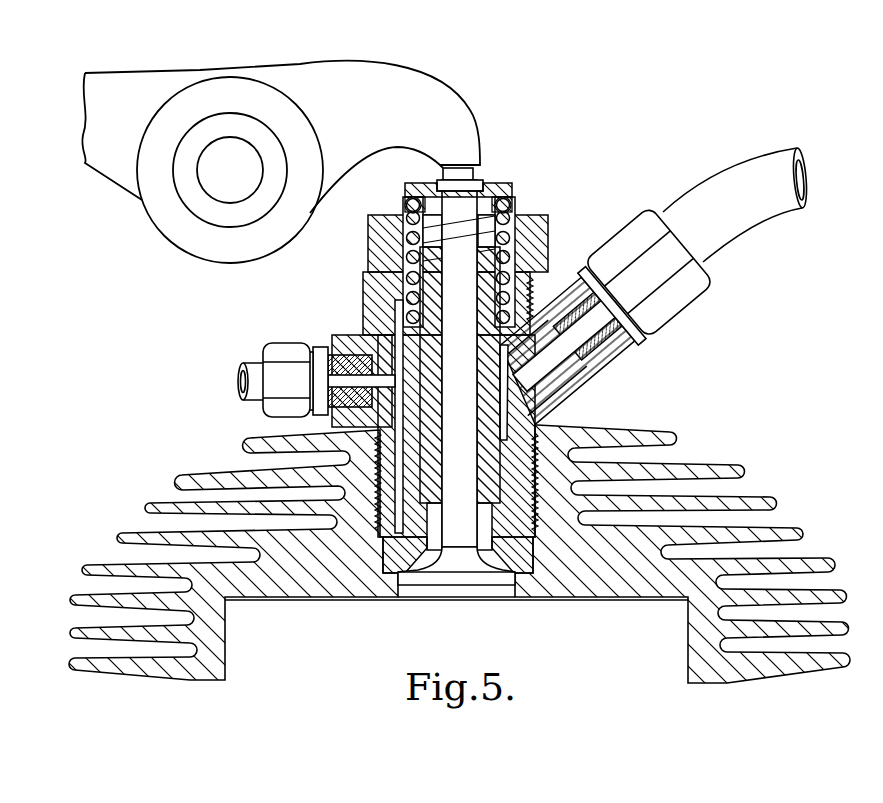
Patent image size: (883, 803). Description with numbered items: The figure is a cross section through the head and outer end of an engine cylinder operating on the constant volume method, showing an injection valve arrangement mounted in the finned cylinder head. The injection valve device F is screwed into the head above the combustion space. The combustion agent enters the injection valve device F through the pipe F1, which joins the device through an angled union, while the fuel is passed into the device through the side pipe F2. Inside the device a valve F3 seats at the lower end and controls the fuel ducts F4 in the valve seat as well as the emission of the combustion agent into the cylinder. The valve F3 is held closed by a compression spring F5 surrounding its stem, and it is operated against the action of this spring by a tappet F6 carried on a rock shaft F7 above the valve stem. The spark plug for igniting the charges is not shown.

The injection valve device F is at (533, 493).
The pipe F1 is at (722, 228).
The pipe F2 is at (253, 373).
The valve F3 is at (483, 587).
The fuel ducts F4 is at (413, 590).
The compression spring F5 is at (480, 243).
The tappet F6 is at (400, 92).
The rock shaft F7 is at (230, 157).